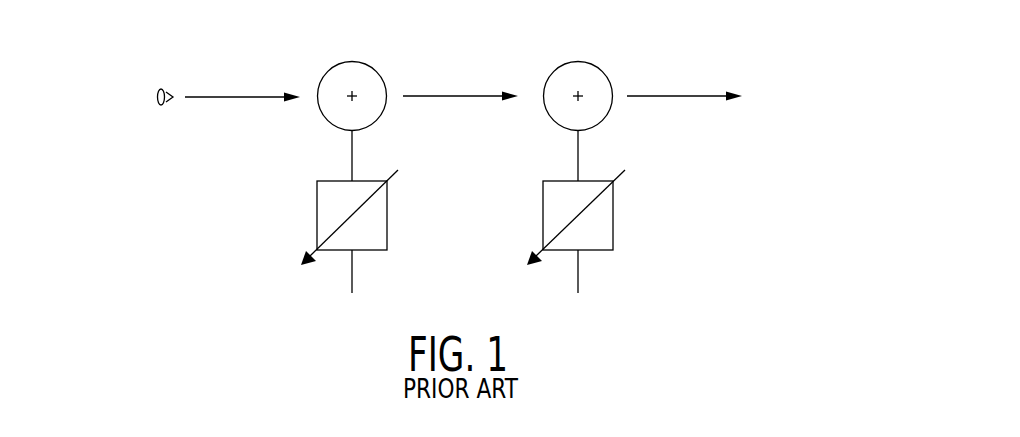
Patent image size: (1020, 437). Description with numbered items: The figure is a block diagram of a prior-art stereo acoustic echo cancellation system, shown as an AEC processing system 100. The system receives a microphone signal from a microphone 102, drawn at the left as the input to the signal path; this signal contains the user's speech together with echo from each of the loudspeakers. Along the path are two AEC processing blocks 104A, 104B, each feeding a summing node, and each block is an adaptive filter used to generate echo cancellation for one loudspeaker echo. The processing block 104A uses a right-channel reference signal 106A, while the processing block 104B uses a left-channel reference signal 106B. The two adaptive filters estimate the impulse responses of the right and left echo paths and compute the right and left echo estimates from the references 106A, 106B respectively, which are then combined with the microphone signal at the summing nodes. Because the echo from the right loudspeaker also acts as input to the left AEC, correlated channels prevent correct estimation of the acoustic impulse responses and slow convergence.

The AEC processing system 100 is at (110, 70).
The microphone 102 is at (170, 88).
The AEC processing block 104A is at (317, 208).
The AEC processing block 104B is at (543, 208).
The right-channel reference signal 106A is at (350, 270).
The left-channel reference signal 106B is at (576, 270).